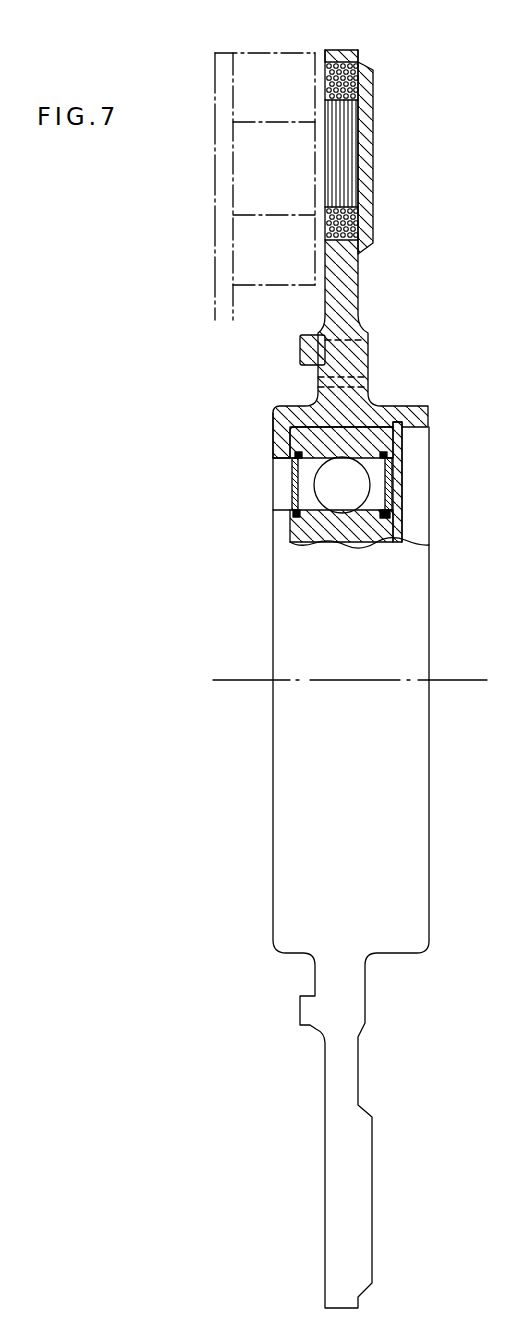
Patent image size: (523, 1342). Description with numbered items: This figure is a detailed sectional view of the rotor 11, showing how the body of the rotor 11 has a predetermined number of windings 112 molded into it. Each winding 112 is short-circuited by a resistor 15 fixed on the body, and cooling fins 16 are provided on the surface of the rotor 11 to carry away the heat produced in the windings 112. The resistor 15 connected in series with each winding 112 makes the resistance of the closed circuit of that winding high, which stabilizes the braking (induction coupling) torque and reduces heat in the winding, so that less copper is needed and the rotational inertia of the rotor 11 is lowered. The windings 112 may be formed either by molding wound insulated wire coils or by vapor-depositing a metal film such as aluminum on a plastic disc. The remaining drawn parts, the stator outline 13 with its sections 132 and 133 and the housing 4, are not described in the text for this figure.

The stator core 13 is at (225, 58).
The stator pole tooth 132 is at (273, 70).
The stator slot 133 is at (250, 168).
The cooling fins 16 is at (370, 184).
The winding 112 is at (371, 221).
The rotor 11 is at (350, 303).
The resistor 15 is at (288, 350).
The housing 4 is at (303, 527).